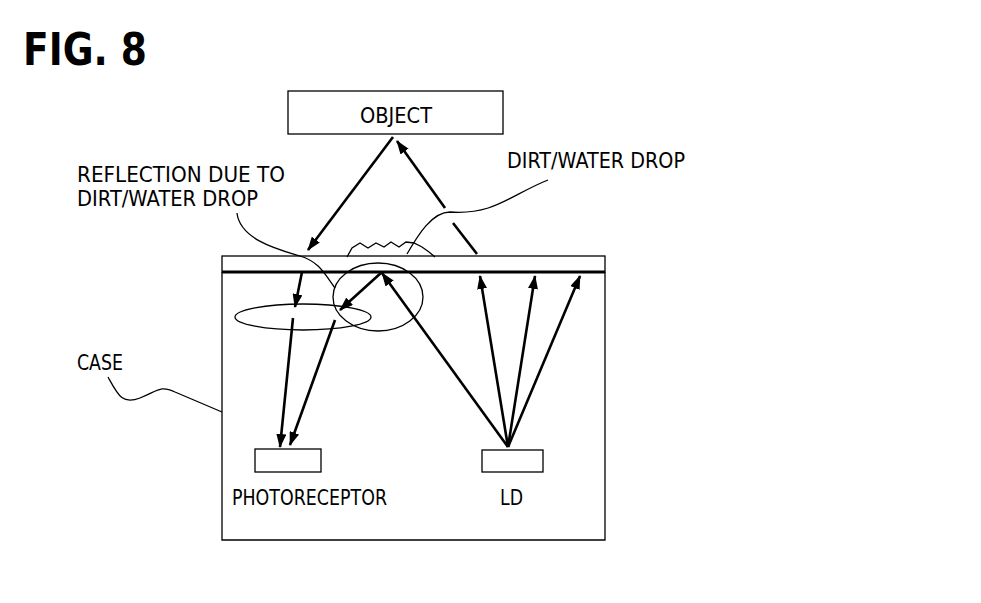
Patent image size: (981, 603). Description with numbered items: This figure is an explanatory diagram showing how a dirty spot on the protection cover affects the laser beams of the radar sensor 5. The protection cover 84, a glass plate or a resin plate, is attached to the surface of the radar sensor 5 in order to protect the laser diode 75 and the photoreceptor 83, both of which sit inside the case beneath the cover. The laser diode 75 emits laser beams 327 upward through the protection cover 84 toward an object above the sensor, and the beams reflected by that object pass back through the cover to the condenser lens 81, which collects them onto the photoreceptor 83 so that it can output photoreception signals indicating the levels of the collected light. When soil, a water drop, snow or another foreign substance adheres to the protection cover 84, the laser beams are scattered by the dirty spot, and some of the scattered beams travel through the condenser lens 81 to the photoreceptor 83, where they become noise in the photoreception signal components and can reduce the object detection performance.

The radar sensor 5 is at (664, 278).
The protection cover 84 is at (580, 257).
The condenser lens 81 is at (240, 315).
The photoreceptor 83 is at (321, 460).
The laser diode 75 is at (532, 450).
The beams 327 is at (465, 383).